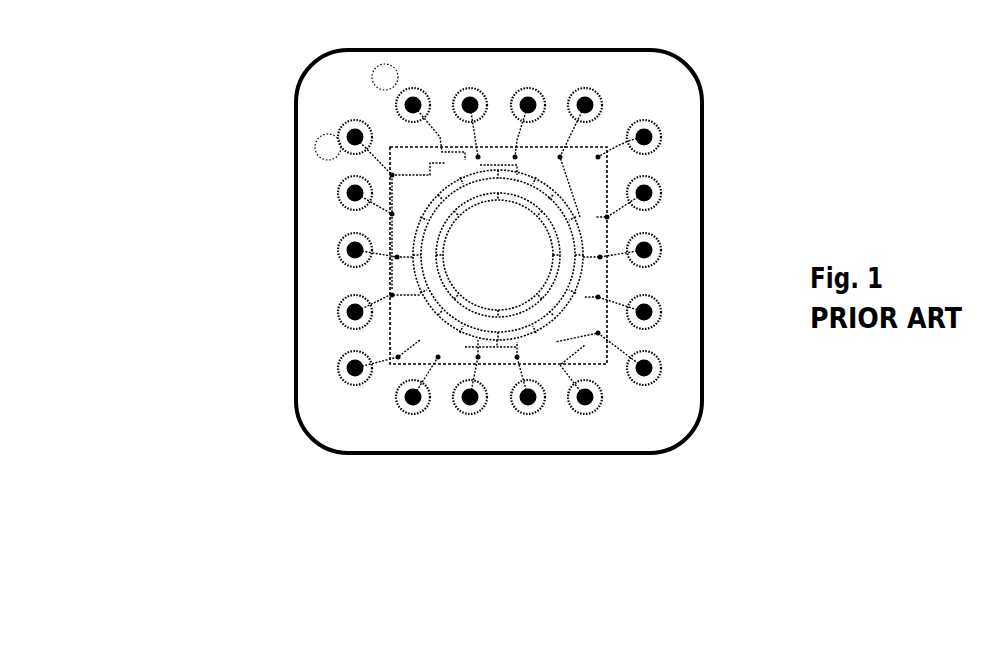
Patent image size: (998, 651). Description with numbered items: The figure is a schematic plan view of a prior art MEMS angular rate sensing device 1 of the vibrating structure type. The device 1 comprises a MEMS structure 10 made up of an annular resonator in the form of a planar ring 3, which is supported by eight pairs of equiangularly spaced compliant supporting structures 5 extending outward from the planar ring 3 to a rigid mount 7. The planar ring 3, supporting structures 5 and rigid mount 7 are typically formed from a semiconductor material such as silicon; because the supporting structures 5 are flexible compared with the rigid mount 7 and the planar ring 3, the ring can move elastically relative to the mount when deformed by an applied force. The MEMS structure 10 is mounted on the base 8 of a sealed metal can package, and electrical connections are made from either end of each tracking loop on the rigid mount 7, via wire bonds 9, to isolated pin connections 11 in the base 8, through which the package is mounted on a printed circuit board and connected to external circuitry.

The angular rate sensing device 1 is at (248, 92).
The planar ring 3 is at (426, 211).
The compliant supporting structures 5 is at (402, 280).
The rigid mount 7 is at (370, 336).
The base 8 is at (651, 440).
The wire bonds 9 is at (434, 386).
The MEMS structure 10 is at (178, 155).
The pin connections 11 is at (476, 424).